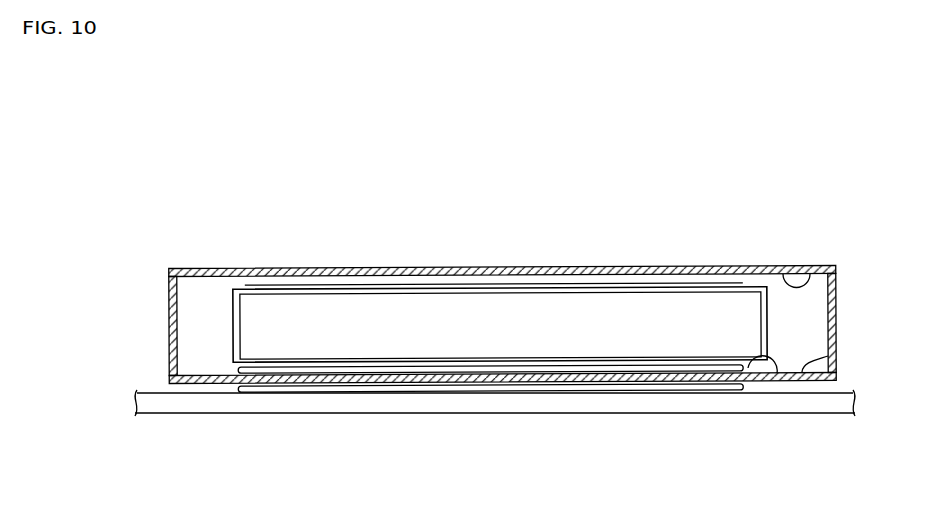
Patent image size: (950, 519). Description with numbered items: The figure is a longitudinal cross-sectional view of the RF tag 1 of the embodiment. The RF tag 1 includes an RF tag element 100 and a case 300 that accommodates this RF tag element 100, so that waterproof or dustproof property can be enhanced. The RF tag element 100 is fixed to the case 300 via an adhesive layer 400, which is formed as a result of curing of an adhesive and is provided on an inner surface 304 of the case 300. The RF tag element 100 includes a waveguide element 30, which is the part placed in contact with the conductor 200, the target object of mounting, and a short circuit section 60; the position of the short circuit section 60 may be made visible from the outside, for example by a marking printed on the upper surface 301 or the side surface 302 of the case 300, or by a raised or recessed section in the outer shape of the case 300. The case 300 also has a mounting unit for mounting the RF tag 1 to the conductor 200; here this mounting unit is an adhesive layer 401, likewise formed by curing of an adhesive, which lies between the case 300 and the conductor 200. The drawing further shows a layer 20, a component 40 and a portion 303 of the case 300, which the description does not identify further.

The RF tag 1 is at (861, 174).
The optical sheet 20 is at (478, 284).
The waveguide element 30 is at (777, 373).
The display panel 40 is at (570, 300).
The short circuit section 60 is at (233, 344).
The RF tag element 100 is at (663, 274).
The conductor 200 is at (400, 407).
The case 300 is at (386, 262).
The upper surface 301 is at (218, 267).
The side surface 302 is at (170, 308).
The groove portion 303 is at (810, 274).
The inner surface 304 is at (828, 356).
The adhesive layer 400 is at (671, 368).
The adhesive layer 401 is at (588, 388).